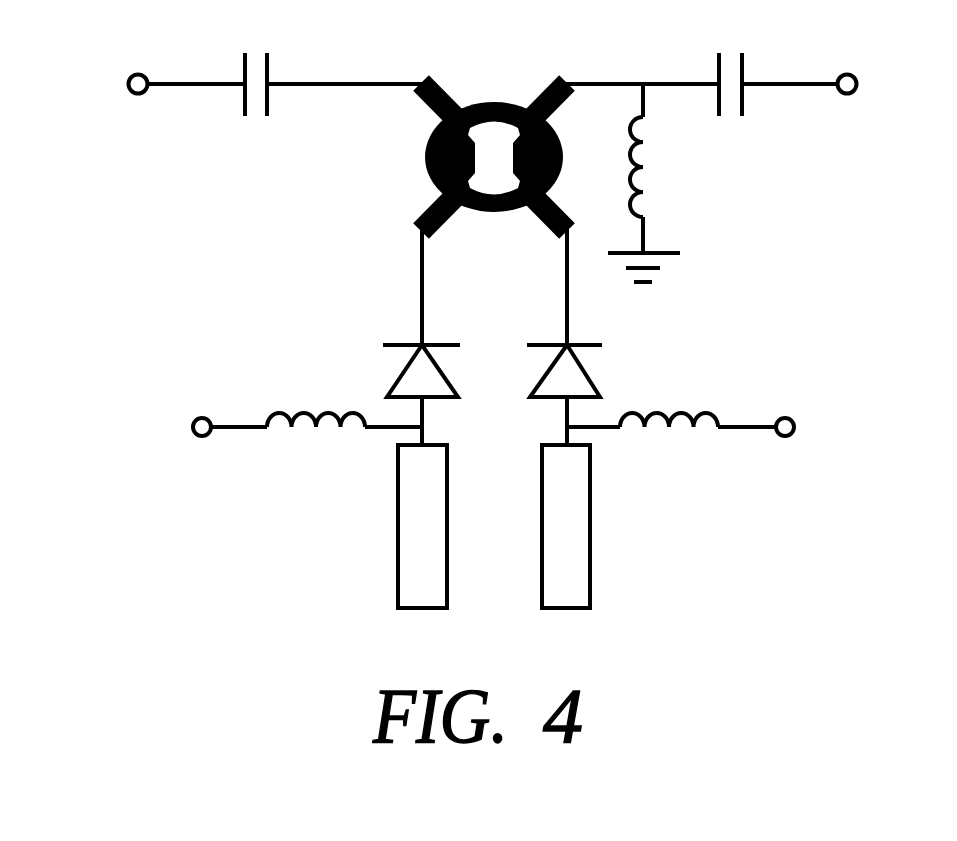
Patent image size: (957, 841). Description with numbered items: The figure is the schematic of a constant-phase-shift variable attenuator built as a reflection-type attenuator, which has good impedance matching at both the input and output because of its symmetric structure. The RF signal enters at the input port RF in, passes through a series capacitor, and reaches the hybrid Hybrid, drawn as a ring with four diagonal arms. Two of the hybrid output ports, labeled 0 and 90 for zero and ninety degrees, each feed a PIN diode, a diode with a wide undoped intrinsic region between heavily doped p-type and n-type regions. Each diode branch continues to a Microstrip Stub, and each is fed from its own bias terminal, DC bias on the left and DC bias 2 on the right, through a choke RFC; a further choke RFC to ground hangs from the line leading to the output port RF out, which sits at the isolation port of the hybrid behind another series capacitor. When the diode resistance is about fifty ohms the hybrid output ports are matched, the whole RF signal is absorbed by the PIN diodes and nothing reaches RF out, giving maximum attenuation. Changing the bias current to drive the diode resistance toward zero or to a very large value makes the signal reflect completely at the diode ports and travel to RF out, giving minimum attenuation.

The RF input port RF in is at (261, 68).
The RF output port RF out is at (738, 75).
The RF choke RFC is at (664, 183).
The hybrid Hybrid is at (494, 132).
The zero-degree hybrid port 0 is at (417, 324).
The ninety-degree hybrid port 90 is at (575, 325).
The microstrip stub Microstrip Stub is at (344, 526).
The DC bias terminal DC bias is at (276, 427).
The DC bias terminal DC bias 2 is at (728, 429).